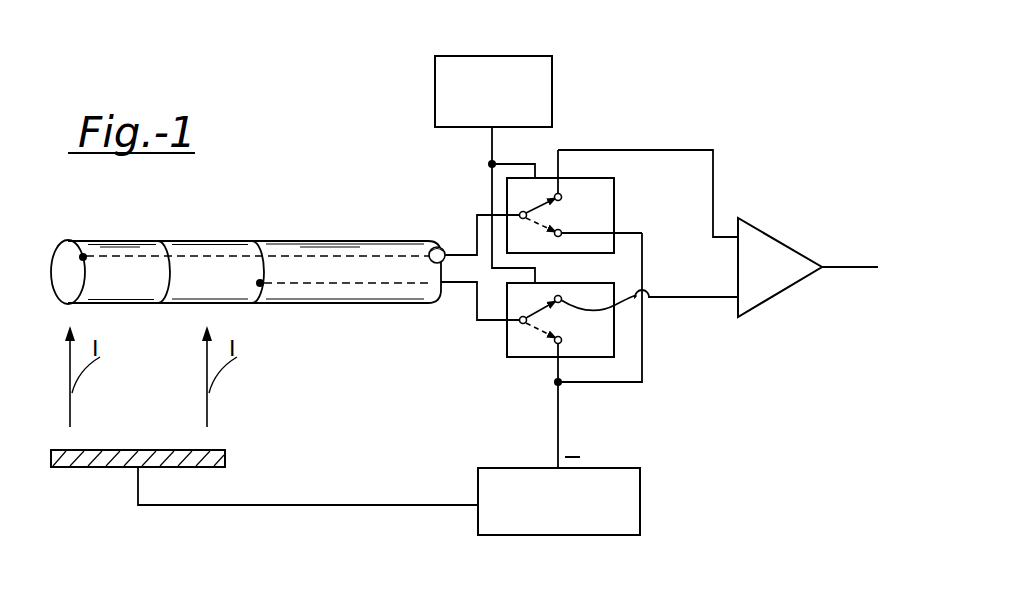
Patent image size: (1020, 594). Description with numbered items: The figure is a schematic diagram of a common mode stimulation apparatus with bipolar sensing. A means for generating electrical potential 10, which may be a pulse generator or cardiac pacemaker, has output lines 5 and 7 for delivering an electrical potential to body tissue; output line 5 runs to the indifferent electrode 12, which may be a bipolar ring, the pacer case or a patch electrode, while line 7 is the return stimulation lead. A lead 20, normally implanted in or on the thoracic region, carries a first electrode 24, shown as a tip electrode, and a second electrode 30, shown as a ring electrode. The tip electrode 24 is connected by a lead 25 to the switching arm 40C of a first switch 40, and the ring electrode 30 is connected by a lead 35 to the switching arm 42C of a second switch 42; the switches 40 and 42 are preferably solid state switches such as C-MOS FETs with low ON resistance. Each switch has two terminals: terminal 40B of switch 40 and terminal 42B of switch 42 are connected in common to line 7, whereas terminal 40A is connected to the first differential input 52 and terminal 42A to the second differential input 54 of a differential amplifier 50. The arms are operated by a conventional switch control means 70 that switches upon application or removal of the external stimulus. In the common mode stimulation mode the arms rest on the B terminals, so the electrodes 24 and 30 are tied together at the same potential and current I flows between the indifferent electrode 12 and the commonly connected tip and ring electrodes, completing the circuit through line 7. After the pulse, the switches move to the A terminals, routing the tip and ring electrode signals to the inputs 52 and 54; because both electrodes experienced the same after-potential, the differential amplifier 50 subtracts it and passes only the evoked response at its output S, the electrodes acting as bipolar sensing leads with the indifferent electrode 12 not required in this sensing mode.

The output line 5 is at (307, 506).
The output line 7 is at (585, 384).
The means for generating electrical potential 10 is at (639, 468).
The indifferent electrode 12 is at (224, 469).
The lead 20 is at (145, 230).
The first electrode 24 is at (56, 243).
The lead 25 is at (458, 253).
The second electrode 30 is at (208, 243).
The lead 35 is at (452, 285).
The first switch 40 is at (595, 173).
The terminal 40A is at (561, 195).
The terminal 40B is at (567, 231).
The switching arm 40C is at (541, 201).
The second switch 42 is at (524, 361).
The terminal 42A is at (640, 292).
The terminal 42B is at (554, 343).
The switching arm 42C is at (539, 303).
The differential amplifier 50 is at (763, 230).
The first differential input 52 is at (680, 151).
The second differential input 54 is at (681, 299).
The switch control means 70 is at (553, 87).